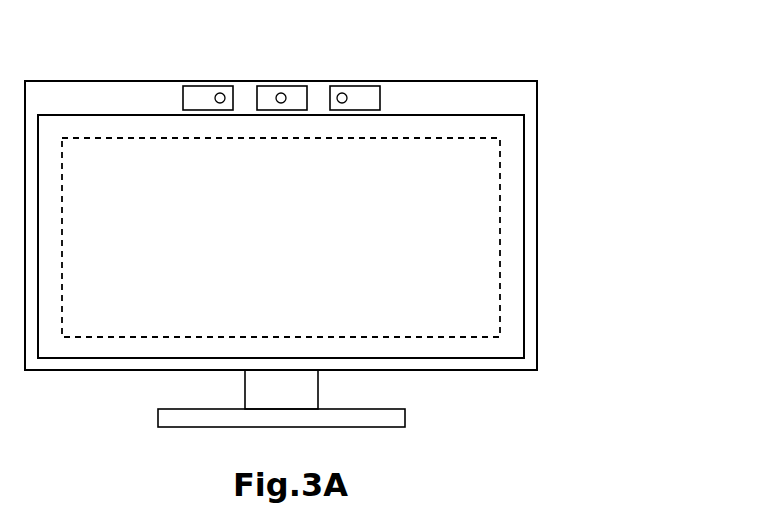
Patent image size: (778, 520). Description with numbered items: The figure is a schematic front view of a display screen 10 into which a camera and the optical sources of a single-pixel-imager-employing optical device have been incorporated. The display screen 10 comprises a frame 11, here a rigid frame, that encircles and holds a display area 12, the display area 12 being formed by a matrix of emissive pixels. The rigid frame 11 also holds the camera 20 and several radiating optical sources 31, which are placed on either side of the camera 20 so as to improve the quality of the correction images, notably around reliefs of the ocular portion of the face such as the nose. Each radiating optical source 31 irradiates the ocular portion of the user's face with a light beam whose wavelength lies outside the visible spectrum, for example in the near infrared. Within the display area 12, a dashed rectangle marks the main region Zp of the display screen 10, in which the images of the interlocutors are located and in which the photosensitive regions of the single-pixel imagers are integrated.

The display screen 10 is at (560, 167).
The frame 11 is at (543, 224).
The display area 12 is at (532, 240).
The camera 20 is at (279, 81).
The radiating optical source 31 is at (197, 81).
The main region Zp is at (462, 346).